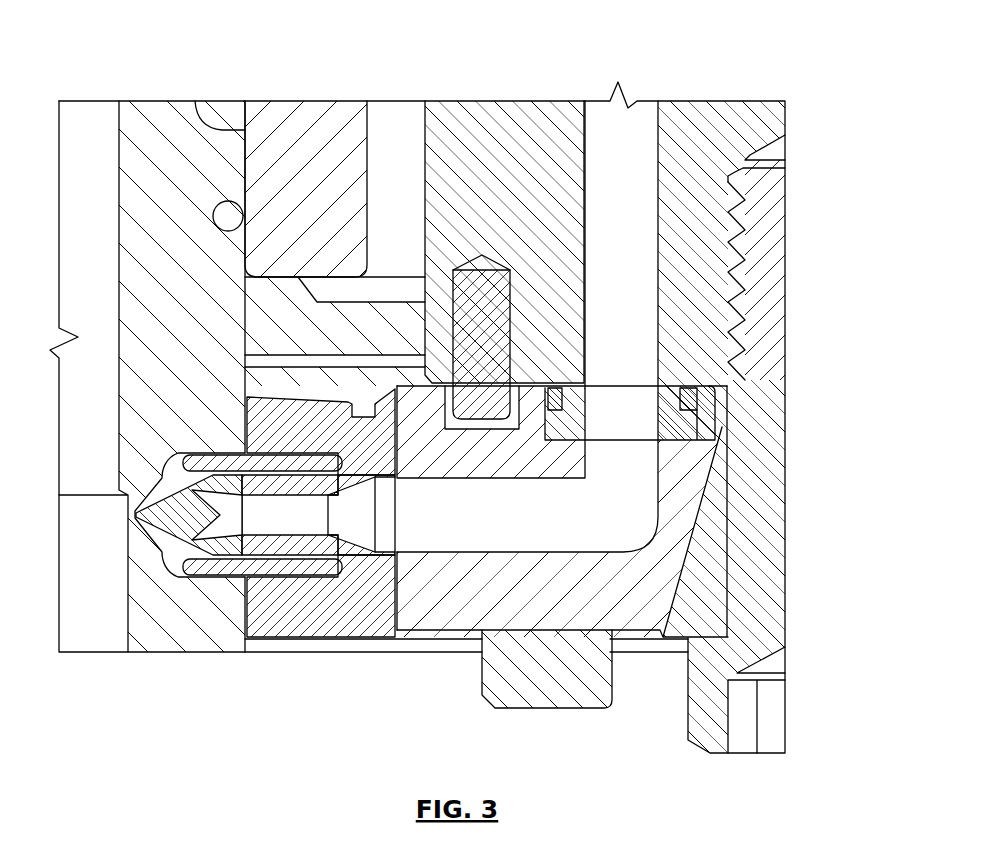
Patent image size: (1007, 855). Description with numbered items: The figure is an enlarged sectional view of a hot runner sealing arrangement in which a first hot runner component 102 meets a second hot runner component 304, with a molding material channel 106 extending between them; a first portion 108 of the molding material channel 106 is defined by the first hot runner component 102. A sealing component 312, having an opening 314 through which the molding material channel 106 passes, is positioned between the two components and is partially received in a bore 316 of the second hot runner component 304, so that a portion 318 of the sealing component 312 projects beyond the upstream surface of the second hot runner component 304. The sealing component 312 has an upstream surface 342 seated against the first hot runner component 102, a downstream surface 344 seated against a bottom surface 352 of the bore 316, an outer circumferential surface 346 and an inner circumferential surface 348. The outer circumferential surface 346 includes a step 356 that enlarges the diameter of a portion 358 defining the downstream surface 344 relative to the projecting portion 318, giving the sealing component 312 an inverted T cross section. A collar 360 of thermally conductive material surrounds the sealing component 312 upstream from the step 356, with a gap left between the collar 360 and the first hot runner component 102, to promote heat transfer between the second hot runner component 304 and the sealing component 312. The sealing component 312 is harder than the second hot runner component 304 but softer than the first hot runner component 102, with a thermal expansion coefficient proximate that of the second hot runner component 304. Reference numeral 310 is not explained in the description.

The first hot runner component 102 is at (568, 120).
The molding material channel 106 is at (532, 52).
The first portion of molding material channel 108 is at (597, 167).
The second hot runner component 304 is at (632, 612).
The valve body 310 is at (478, 500).
The sealing component 312 is at (607, 400).
The opening 314 is at (613, 380).
The bore 316 is at (575, 445).
The portion of sealing component 318 is at (697, 385).
The upstream surface 342 is at (648, 405).
The downstream surface 344 is at (706, 482).
The outer circumferential surface 346 is at (700, 405).
The inner circumferential surface 348 is at (715, 387).
The bottom surface of bore 352 is at (700, 468).
The step 356 is at (778, 380).
The portion of sealing component 358 is at (723, 421).
The collar 360 is at (550, 383).